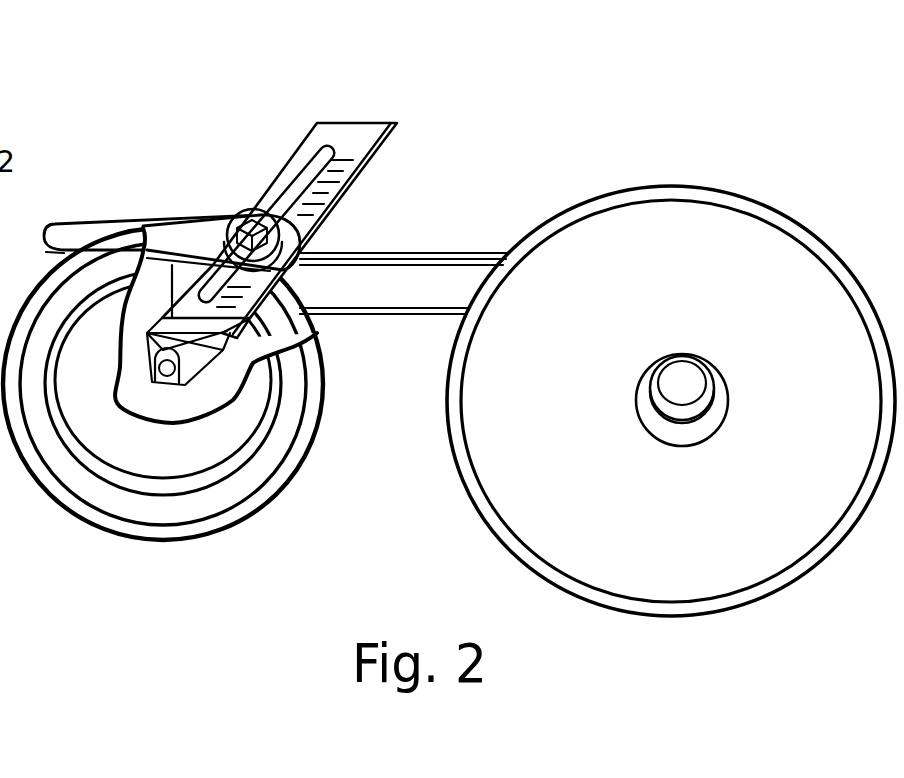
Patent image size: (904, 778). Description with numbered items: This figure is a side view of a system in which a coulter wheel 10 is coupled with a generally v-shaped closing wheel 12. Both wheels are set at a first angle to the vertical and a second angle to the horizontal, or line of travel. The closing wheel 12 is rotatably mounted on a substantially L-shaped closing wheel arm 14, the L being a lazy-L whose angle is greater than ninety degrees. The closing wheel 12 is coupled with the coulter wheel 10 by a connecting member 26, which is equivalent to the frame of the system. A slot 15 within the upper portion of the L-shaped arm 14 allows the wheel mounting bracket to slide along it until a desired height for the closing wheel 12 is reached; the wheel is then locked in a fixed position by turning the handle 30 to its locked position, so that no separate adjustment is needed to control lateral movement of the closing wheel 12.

The coulter wheel 10 is at (753, 242).
The closing wheel 12 is at (163, 520).
The closing wheel arm 14 is at (323, 138).
The slot 15 is at (343, 157).
The connecting member 26 is at (403, 273).
The handle 30 is at (70, 227).